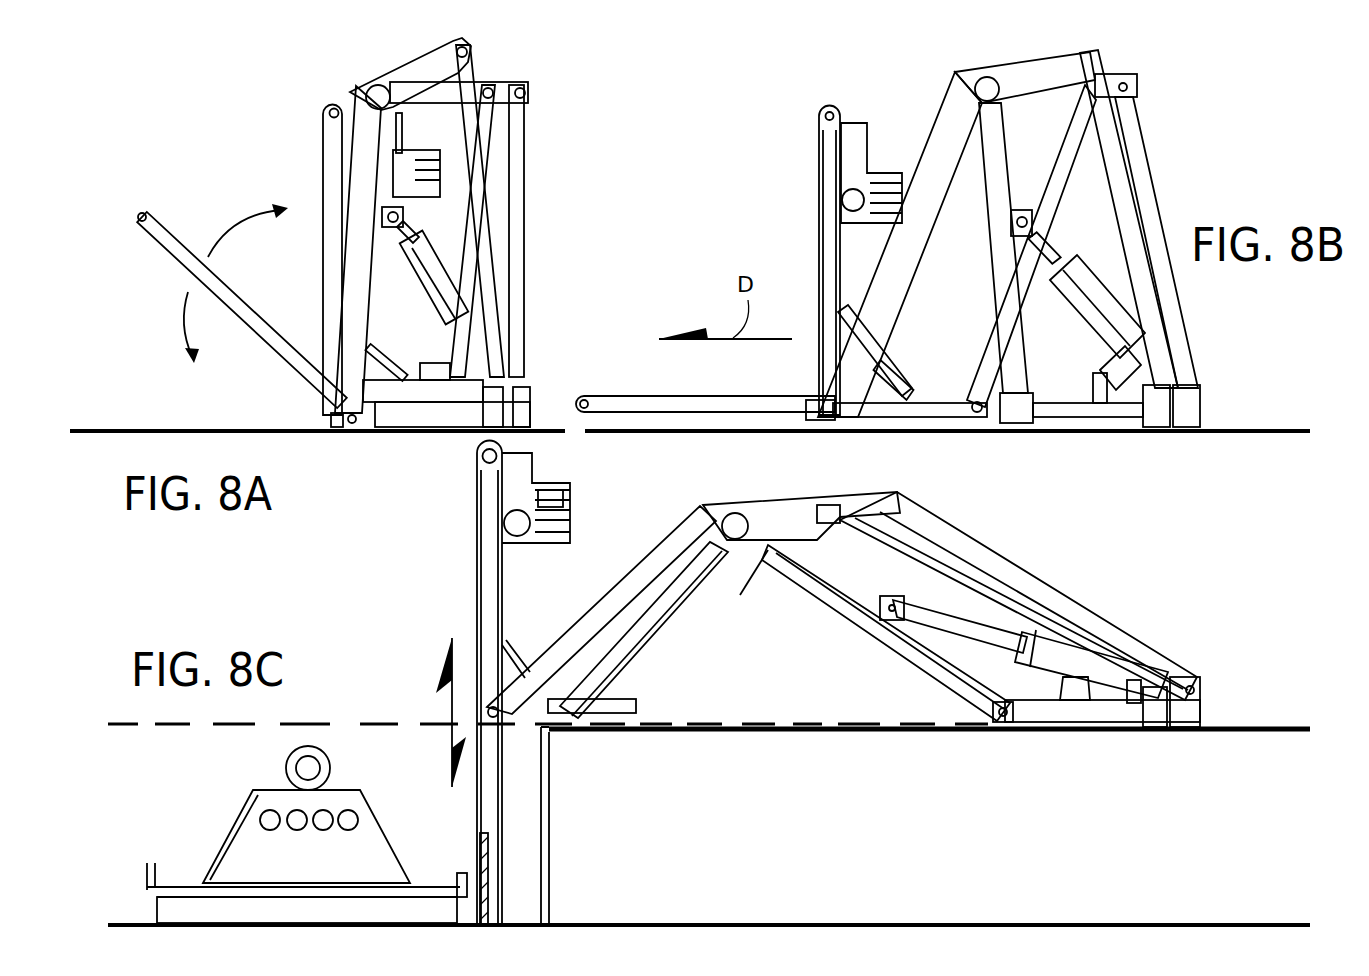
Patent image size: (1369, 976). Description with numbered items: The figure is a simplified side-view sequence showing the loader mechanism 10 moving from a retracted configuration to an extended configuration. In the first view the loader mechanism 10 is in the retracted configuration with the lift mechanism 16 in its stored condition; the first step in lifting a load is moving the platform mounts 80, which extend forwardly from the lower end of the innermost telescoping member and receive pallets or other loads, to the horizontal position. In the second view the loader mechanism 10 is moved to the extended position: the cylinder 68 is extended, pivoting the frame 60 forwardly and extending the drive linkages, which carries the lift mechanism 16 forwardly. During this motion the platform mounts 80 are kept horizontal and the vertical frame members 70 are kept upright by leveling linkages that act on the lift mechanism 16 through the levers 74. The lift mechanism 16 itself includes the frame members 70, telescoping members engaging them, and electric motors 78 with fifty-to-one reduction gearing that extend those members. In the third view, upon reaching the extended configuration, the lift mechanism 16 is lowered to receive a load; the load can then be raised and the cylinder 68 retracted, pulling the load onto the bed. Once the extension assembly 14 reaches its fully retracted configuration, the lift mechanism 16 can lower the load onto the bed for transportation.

In FIG. 8A, the loader mechanism 10 is at (272, 176).
In FIG. 8C, the loader mechanism 10 is at (386, 632).
In FIG. 8A, the extension assembly 14 is at (538, 132).
In FIG. 8B, the extension assembly 14 is at (1158, 133).
In FIG. 8C, the extension assembly 14 is at (985, 532).
In FIG. 8A, the lift mechanism 16 is at (316, 153).
In FIG. 8B, the lift mechanism 16 is at (816, 191).
In FIG. 8C, the lift mechanism 16 is at (470, 505).
In FIG. 8A, the frame 60 is at (362, 338).
In FIG. 8B, the frame 60 is at (998, 152).
In FIG. 8C, the frame 60 is at (843, 612).
In FIG. 8A, the cylinder 68 is at (423, 249).
In FIG. 8B, the cylinder 68 is at (1088, 270).
In FIG. 8C, the cylinder 68 is at (1110, 655).
In FIG. 8B, the frame members 70 is at (830, 258).
In FIG. 8C, the frame members 70 is at (486, 614).
In FIG. 8A, the levers 74 is at (407, 362).
In FIG. 8B, the levers 74 is at (933, 398).
In FIG. 8C, the levers 74 is at (583, 697).
In FIG. 8A, the electric motors 78 is at (416, 155).
In FIG. 8B, the electric motors 78 is at (863, 175).
In FIG. 8C, the electric motors 78 is at (572, 497).
In FIG. 8A, the platform mounts 80 is at (172, 235).
In FIG. 8B, the platform mounts 80 is at (618, 392).
In FIG. 8C, the platform mounts 80 is at (463, 878).